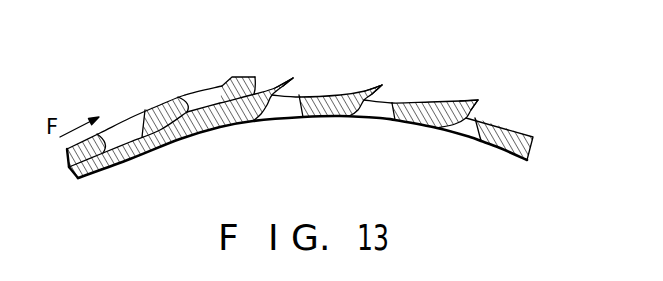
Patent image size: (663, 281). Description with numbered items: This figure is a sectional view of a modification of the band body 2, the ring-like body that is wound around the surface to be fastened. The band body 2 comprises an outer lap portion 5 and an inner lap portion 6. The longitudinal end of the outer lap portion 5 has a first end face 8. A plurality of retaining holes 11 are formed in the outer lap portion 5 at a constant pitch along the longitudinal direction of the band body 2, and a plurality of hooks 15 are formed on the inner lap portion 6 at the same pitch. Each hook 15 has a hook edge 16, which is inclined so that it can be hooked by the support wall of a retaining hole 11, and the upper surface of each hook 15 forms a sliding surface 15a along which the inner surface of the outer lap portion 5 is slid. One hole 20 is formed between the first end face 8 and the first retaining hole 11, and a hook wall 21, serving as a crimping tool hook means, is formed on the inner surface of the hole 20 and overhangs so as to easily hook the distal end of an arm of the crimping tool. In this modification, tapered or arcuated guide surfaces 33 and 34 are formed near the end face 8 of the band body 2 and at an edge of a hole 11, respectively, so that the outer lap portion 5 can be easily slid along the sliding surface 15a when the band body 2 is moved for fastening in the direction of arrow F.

The band body 2 is at (531, 136).
The outer lap portion 5 is at (67, 155).
The inner lap portion 6 is at (117, 153).
The first end face 8 is at (240, 77).
The retaining hole 11 is at (134, 118).
The hook 15 is at (288, 78).
The sliding surface 15a is at (293, 79).
The hook edge 16 is at (272, 120).
The hole 20 is at (200, 100).
The hook wall 21 is at (213, 128).
The guide surface 33 is at (261, 80).
The guide surface 34 is at (180, 79).